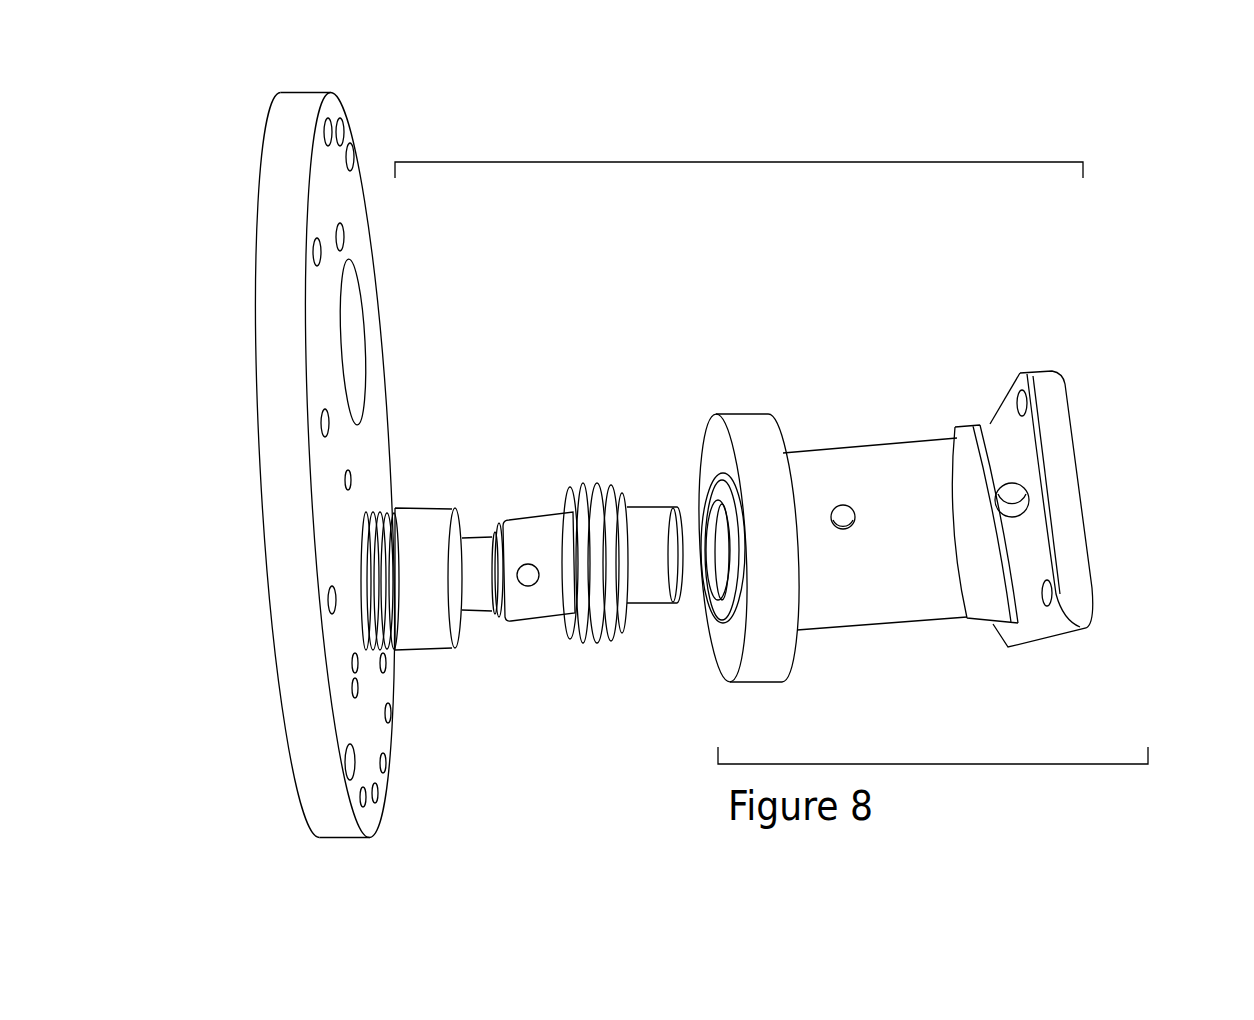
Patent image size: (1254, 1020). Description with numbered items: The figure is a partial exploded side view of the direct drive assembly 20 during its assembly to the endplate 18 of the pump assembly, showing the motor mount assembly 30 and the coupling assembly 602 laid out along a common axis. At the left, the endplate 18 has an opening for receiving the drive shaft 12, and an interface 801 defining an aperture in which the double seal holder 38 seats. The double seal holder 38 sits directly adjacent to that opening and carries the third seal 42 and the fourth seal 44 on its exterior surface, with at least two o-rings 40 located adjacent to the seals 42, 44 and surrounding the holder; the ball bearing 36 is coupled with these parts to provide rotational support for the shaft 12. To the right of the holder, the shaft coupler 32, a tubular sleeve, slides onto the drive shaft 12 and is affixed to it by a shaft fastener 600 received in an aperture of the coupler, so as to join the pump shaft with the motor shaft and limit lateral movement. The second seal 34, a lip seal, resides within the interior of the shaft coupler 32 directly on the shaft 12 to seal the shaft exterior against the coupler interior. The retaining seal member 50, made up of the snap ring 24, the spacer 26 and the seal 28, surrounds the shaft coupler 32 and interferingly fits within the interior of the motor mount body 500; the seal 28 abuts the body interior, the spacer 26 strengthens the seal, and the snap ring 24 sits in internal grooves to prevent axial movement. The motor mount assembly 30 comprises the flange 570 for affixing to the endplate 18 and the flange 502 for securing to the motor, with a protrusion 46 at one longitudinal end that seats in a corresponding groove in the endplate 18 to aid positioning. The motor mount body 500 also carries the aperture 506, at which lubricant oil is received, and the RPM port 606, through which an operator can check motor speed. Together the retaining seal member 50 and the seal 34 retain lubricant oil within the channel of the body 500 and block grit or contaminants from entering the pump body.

The endplate 18 is at (303, 122).
The interface 801 is at (358, 595).
The third seal 42 is at (367, 514).
The fourth seal 44 is at (370, 530).
The o-rings 40 is at (390, 513).
The double seal holder 38 is at (433, 668).
The ball bearing 36 is at (415, 547).
The drive shaft 12 is at (483, 587).
The second seal 34 is at (500, 525).
The shaft fastener 600 is at (535, 628).
The coupling assembly 602 is at (543, 557).
The retaining seal member 50 is at (543, 637).
The seal 28 is at (580, 640).
The spacer 26 is at (610, 641).
The snap ring 24 is at (623, 622).
The shaft coupler 32 is at (650, 547).
The flange 570 is at (693, 543).
The protrusion 46 is at (717, 610).
The motor mount body 500 is at (875, 586).
The aperture 506 is at (845, 525).
The flange 502 is at (1090, 526).
The RPM port 606 is at (1011, 505).
The direct drive assembly 20 is at (750, 162).
The motor mount assembly 30 is at (933, 764).